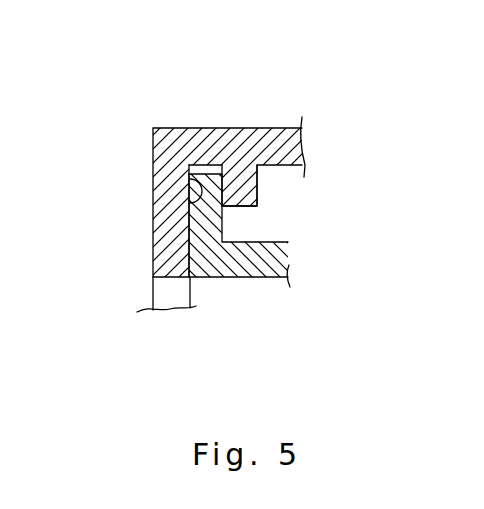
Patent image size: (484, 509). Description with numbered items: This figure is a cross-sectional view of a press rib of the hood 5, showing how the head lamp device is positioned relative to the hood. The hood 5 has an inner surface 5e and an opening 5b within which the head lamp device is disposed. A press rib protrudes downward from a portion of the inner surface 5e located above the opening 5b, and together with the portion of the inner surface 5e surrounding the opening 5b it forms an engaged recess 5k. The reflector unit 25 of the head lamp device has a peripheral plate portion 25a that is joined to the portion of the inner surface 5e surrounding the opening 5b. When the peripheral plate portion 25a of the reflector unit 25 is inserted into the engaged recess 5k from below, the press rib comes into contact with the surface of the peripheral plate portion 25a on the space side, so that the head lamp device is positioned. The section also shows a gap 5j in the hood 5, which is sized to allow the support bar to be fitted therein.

The hood 5 is at (277, 128).
The engaged recess 5k is at (210, 165).
The inner surface 5e is at (190, 179).
The gap 5j is at (257, 197).
The opening 5b is at (153, 297).
The reflector unit 25 is at (255, 278).
The peripheral plate portion 25a is at (203, 223).